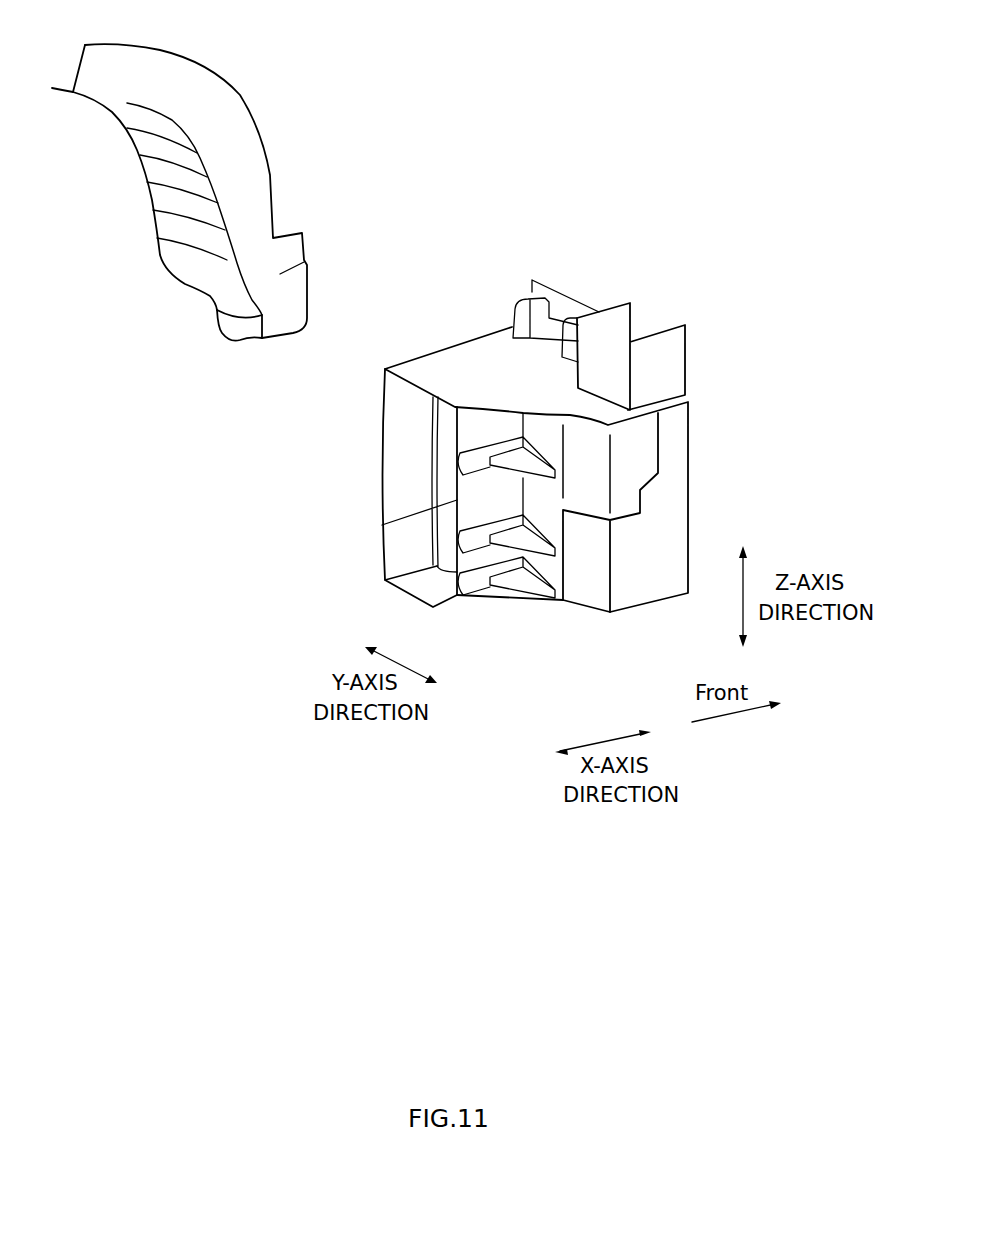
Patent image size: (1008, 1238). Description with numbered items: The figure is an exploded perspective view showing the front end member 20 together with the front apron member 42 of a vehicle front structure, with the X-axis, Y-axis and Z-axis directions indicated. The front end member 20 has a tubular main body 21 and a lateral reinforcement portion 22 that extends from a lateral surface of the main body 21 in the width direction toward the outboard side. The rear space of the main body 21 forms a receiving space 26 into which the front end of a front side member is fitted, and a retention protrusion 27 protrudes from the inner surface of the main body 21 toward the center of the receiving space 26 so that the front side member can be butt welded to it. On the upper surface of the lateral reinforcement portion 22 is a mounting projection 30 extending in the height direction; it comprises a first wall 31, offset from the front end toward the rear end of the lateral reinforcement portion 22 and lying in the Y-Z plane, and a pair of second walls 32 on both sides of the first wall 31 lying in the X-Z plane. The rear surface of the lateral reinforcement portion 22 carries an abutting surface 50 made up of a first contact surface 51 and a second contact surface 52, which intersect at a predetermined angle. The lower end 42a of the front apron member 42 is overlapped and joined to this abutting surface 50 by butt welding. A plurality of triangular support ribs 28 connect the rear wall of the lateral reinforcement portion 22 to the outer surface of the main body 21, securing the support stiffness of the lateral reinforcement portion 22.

The front end member 20 is at (500, 476).
The main body 21 is at (462, 365).
The lateral reinforcement portion 22 is at (587, 575).
The receiving space 26 is at (416, 478).
The retention protrusion 27 is at (432, 541).
The support ribs 28 is at (523, 458).
The mounting projection 30 is at (634, 319).
The first wall 31 is at (603, 338).
The second walls 32 is at (618, 317).
The front apron member 42 is at (158, 195).
The lower end of front apron member 42a is at (235, 325).
The abutting surface 50 is at (669, 469).
The first contact surface 51 is at (588, 490).
The second contact surface 52 is at (628, 450).